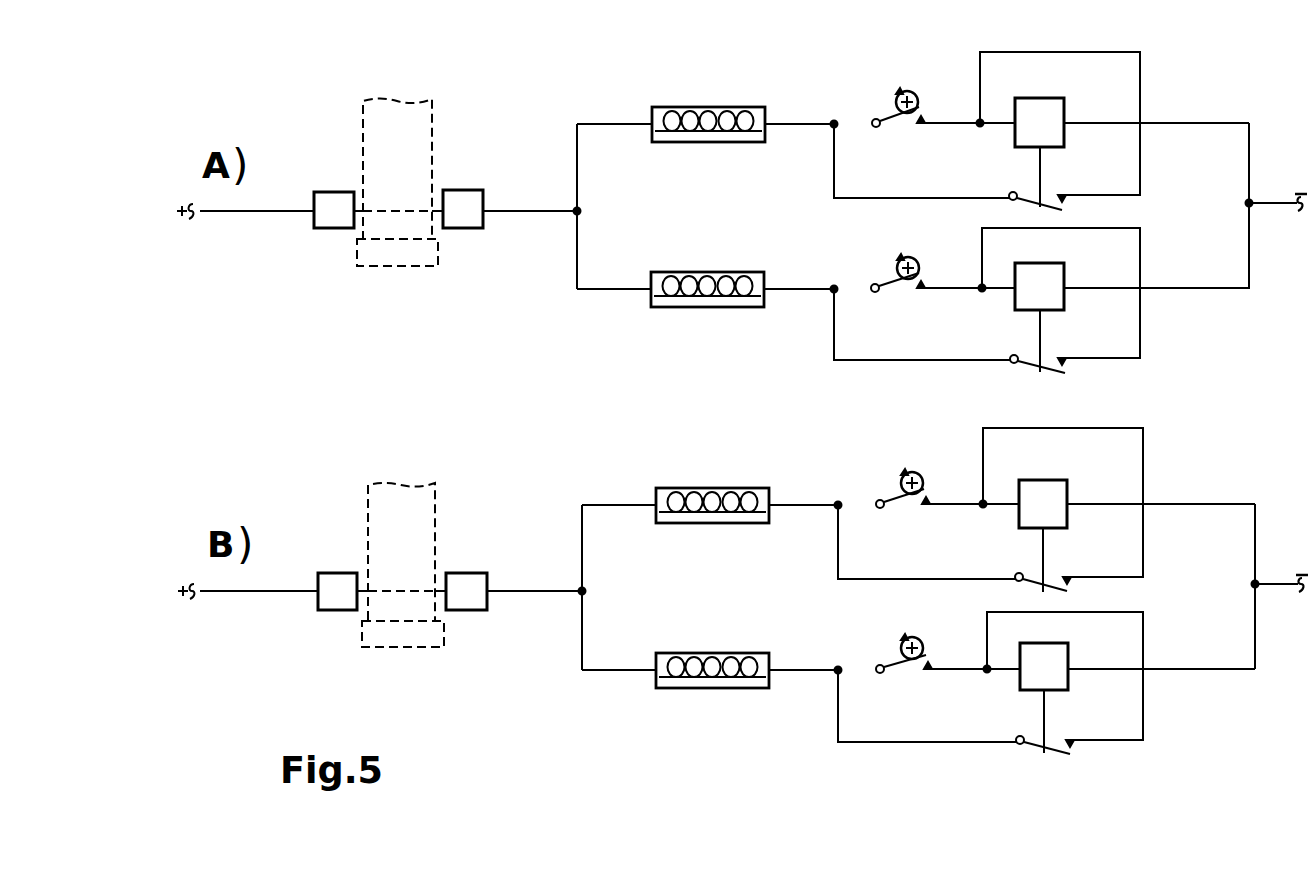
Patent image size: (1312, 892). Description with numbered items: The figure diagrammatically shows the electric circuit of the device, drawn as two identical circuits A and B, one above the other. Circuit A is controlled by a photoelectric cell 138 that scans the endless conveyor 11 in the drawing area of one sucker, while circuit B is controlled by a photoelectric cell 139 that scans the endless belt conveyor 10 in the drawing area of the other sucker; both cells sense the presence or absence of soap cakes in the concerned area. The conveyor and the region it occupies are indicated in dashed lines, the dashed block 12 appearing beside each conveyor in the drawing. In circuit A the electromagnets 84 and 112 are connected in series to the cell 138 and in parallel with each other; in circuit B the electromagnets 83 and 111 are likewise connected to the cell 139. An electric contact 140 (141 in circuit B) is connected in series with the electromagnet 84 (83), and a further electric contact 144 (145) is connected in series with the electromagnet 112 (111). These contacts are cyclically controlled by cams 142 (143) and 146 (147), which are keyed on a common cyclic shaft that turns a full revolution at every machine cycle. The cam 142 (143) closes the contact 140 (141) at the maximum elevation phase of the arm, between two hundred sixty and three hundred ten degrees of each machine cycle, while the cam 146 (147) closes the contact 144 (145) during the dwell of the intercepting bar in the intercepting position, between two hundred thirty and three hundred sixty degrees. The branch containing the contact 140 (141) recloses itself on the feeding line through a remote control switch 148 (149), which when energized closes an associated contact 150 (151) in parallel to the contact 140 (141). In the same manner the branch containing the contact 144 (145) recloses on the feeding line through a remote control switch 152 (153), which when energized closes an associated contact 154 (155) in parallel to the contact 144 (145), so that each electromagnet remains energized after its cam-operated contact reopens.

The endless belt conveyor 10 is at (425, 513).
The endless conveyor 11 is at (424, 137).
The sensing element housing 12 is at (433, 252).
The electromagnet 83 is at (703, 498).
The electromagnet 84 is at (700, 107).
The electromagnet 111 is at (707, 683).
The electromagnet 112 is at (702, 308).
The photoelectric cell 138 is at (355, 225).
The photoelectric cell 139 is at (363, 597).
The electric contact 140 is at (893, 121).
The electric contact 141 is at (903, 503).
The cam 142 is at (917, 97).
The cam 143 is at (922, 478).
The electric contact 144 is at (895, 286).
The electric contact 145 is at (903, 668).
The cam 146 is at (918, 263).
The cam 147 is at (922, 643).
The remote control switch 148 is at (1040, 110).
The remote control switch 149 is at (1045, 488).
The contact 150 is at (1032, 193).
The contact 151 is at (1035, 573).
The remote control switch 152 is at (1055, 277).
The remote control switch 153 is at (1057, 655).
The contact 154 is at (1055, 374).
The contact 155 is at (1057, 755).